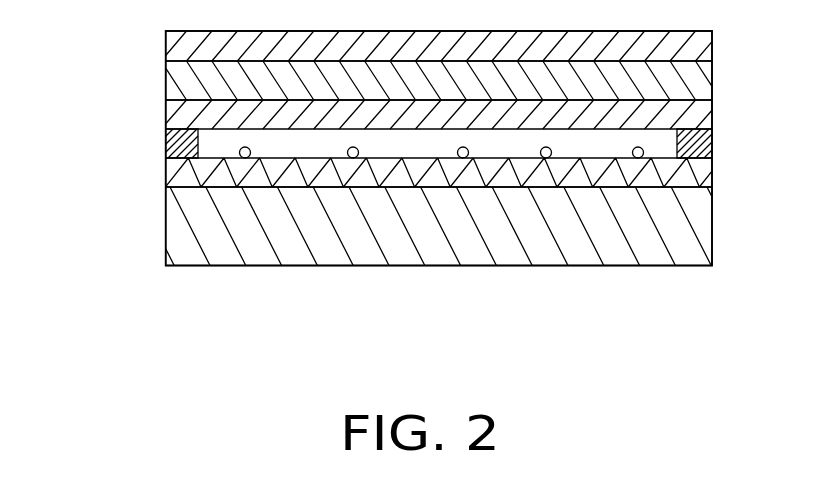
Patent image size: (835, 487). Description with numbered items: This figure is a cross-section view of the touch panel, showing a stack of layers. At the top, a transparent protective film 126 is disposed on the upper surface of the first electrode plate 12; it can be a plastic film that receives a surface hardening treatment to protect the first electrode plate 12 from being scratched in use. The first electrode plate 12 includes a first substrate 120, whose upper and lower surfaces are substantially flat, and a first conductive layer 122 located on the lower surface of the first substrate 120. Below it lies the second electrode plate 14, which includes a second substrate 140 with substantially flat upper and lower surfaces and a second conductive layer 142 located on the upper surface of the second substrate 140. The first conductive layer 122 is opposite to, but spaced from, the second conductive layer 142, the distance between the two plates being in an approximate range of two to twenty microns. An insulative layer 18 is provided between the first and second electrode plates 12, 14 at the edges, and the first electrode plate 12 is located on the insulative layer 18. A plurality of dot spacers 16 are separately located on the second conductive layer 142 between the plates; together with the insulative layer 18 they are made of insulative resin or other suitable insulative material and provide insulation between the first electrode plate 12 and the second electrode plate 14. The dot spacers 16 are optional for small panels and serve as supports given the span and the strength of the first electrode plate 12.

The first electrode plate 12 is at (365, 74).
The transparent protective film 126 is at (185, 49).
The first substrate 120 is at (185, 87).
The first conductive layer 122 is at (185, 117).
The second electrode plate 14 is at (364, 206).
The second conductive layer 142 is at (187, 181).
The second substrate 140 is at (187, 245).
The dot spacers 16 is at (239, 153).
The insulative layer 18 is at (697, 143).